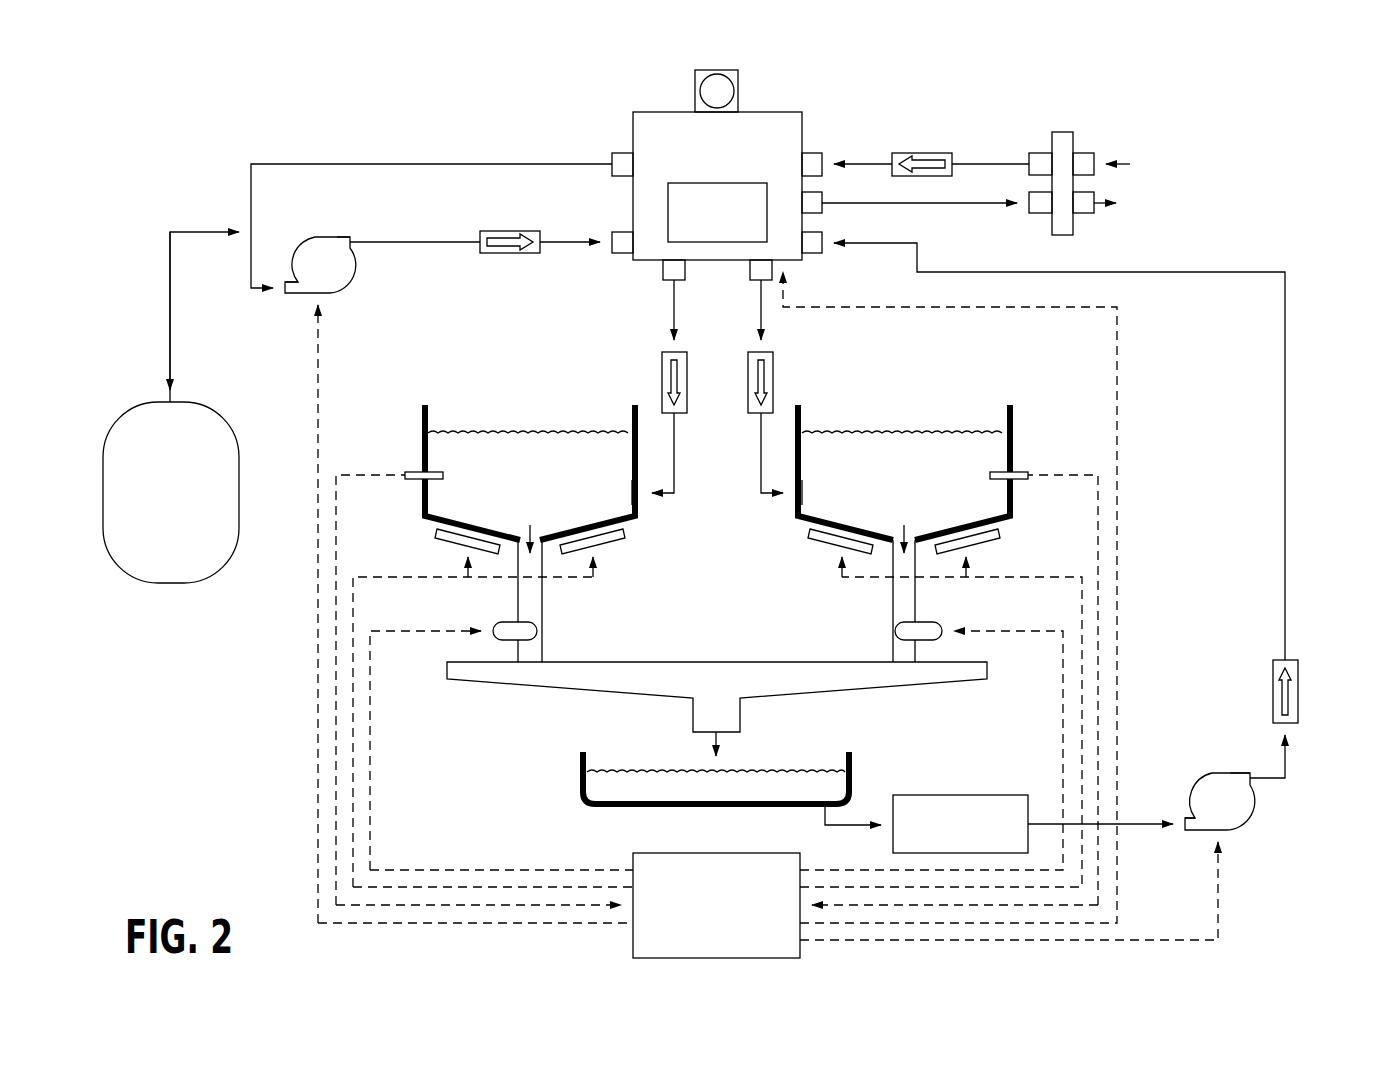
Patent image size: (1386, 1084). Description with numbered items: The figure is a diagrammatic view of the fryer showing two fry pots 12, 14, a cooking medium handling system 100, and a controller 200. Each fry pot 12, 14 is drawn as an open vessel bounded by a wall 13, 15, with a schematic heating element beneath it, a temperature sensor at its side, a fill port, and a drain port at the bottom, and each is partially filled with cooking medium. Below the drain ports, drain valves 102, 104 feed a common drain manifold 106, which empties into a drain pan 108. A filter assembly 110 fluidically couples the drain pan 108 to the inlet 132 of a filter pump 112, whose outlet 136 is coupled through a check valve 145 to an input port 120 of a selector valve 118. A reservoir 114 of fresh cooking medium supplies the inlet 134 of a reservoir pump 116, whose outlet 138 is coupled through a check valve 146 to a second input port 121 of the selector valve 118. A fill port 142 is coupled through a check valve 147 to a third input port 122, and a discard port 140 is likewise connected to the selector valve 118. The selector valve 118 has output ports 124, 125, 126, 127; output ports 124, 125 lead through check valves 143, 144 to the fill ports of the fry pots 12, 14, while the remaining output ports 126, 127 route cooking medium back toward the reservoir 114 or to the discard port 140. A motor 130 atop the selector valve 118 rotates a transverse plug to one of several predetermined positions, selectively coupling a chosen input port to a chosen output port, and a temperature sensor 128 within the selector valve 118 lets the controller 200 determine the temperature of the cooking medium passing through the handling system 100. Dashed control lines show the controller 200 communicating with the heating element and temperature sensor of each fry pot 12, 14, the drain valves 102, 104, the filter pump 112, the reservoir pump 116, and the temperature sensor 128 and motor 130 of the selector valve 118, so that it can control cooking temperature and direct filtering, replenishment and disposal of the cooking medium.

The cooking medium handling system 100 is at (210, 130).
The fry pot 12 is at (528, 394).
The first vat wall 13 is at (429, 412).
The fry pot 14 is at (910, 394).
The second vat wall 15 is at (1005, 412).
The drain valve 102 is at (533, 622).
The drain valve 104 is at (897, 622).
The drain manifold 106 is at (465, 684).
The drain pan 108 is at (580, 756).
The filter assembly 110 is at (987, 795).
The filter pump 112 is at (1248, 822).
The reservoir 114 is at (208, 404).
The reservoir pump 116 is at (347, 288).
The selector valve 118 is at (650, 112).
The input port 120 is at (815, 253).
The input port 121 is at (615, 253).
The input port 122 is at (818, 153).
The output port 124 is at (662, 272).
The output port 125 is at (750, 272).
The output port 126 is at (614, 153).
The output port 127 is at (825, 210).
The temperature sensor 128 is at (668, 203).
The motor 130 is at (695, 82).
The inlet 132 is at (1186, 830).
The inlet 134 is at (290, 293).
The outlet 136 is at (1240, 773).
The outlet 138 is at (340, 237).
The discard port 140 is at (1083, 213).
The fill port 142 is at (1080, 153).
The check valve 143 is at (662, 381).
The check valve 144 is at (773, 381).
The check valve 145 is at (1298, 688).
The check valve 146 is at (492, 253).
The check valve 147 is at (950, 153).
The controller 200 is at (630, 856).